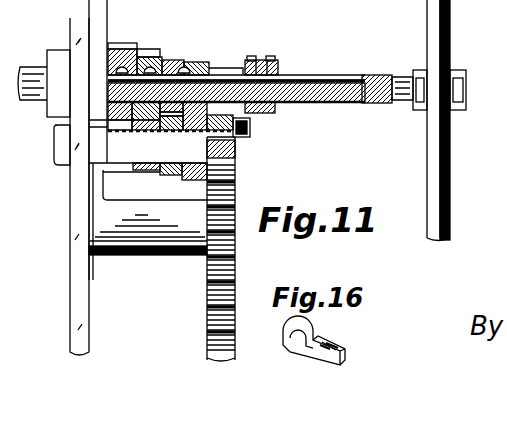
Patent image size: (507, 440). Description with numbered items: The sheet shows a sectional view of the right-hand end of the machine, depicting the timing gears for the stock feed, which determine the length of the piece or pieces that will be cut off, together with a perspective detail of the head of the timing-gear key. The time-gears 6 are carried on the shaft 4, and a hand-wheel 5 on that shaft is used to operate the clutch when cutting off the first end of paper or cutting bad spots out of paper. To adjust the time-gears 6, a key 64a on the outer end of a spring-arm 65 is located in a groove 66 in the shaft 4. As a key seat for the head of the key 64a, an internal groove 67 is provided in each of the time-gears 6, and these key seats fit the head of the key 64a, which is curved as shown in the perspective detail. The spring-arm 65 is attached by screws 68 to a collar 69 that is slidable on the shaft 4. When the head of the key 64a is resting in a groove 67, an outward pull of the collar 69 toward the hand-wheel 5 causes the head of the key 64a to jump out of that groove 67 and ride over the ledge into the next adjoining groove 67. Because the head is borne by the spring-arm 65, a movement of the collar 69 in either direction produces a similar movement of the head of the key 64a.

In FIG. 11, the shaft 4 is at (370, 75).
In FIG. 11, the hand-wheel 5 is at (440, 130).
In FIG. 11, the time-gears 6 is at (232, 185).
In FIG. 11, the key 64a is at (107, 48).
In FIG. 16, the key 64a is at (290, 340).
In FIG. 11, the spring-arm 65 is at (247, 60).
In FIG. 16, the spring-arm 65 is at (336, 348).
In FIG. 11, the groove 66 is at (302, 76).
In FIG. 11, the internal groove 67 is at (122, 68).
In FIG. 11, the screws 68 is at (272, 57).
In FIG. 11, the collar 69 is at (276, 113).